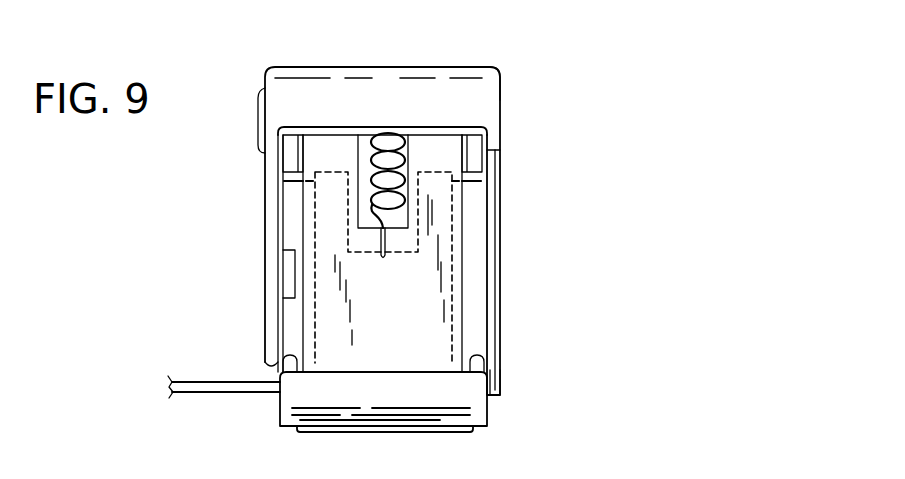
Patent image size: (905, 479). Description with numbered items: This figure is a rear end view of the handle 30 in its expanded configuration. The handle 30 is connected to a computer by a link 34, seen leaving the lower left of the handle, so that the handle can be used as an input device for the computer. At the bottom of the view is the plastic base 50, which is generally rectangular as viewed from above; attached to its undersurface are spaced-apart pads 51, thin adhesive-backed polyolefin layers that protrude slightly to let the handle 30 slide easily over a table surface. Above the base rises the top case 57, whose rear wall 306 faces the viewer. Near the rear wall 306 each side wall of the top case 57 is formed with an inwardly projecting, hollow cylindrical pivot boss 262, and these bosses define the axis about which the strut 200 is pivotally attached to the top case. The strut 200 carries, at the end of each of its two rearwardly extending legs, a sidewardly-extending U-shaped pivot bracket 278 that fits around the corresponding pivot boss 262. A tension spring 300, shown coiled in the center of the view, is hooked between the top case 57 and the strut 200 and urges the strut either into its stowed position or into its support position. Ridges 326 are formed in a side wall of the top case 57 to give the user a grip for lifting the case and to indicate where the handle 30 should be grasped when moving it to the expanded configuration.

The handle 30 is at (230, 132).
The link 34 is at (208, 378).
The base 50 is at (463, 408).
The pads 51 is at (417, 430).
The top case 57 is at (500, 87).
The strut 200 is at (467, 243).
The pivot boss 262 is at (285, 156).
The pivot bracket 278 is at (290, 190).
The tension spring 300 is at (403, 150).
The rear wall 306 is at (370, 90).
The ridges 326 is at (261, 118).